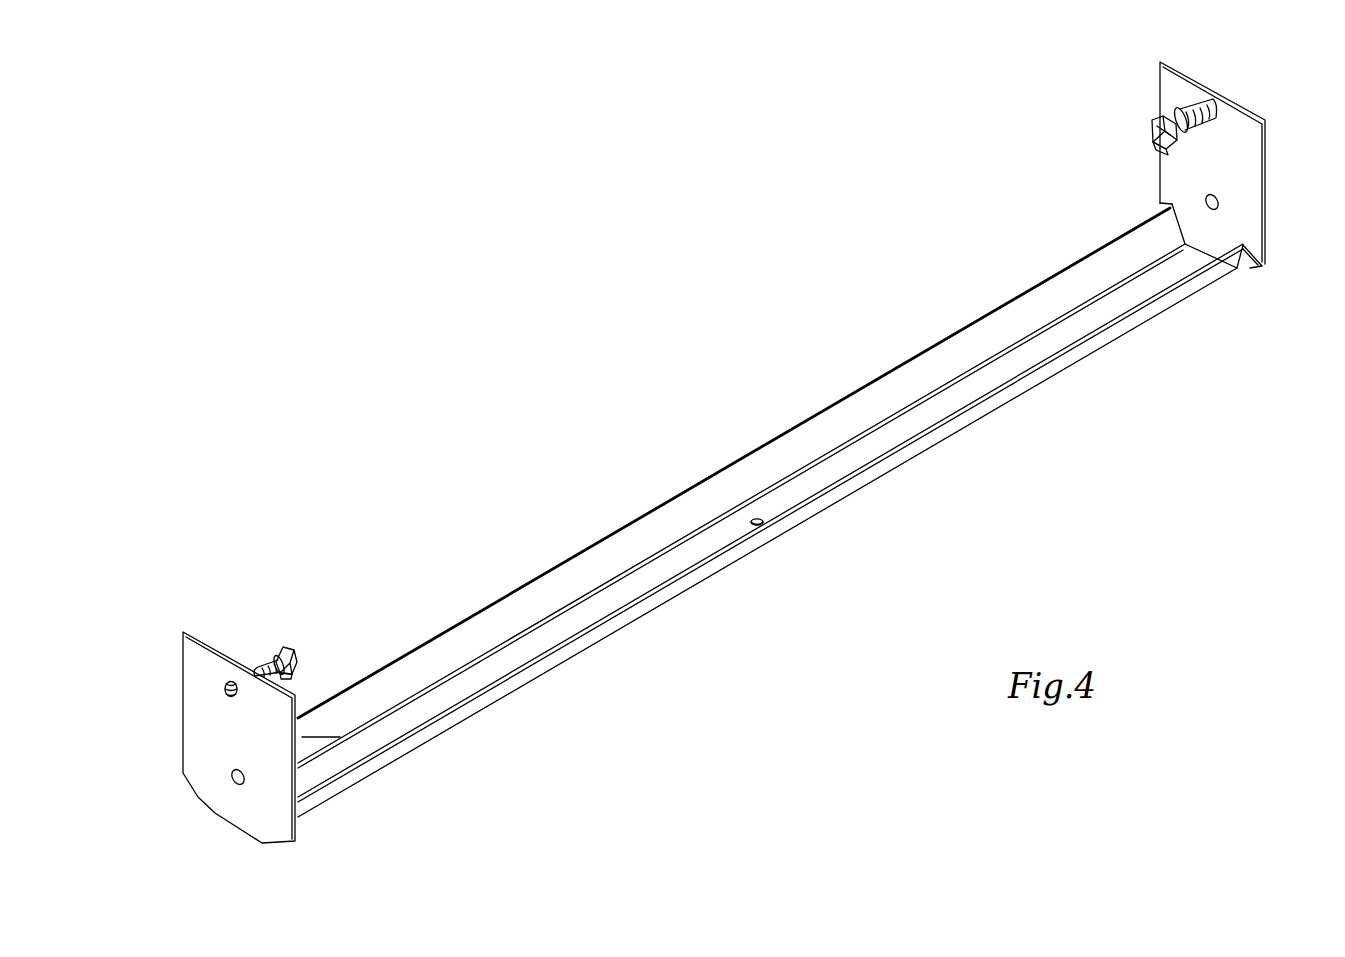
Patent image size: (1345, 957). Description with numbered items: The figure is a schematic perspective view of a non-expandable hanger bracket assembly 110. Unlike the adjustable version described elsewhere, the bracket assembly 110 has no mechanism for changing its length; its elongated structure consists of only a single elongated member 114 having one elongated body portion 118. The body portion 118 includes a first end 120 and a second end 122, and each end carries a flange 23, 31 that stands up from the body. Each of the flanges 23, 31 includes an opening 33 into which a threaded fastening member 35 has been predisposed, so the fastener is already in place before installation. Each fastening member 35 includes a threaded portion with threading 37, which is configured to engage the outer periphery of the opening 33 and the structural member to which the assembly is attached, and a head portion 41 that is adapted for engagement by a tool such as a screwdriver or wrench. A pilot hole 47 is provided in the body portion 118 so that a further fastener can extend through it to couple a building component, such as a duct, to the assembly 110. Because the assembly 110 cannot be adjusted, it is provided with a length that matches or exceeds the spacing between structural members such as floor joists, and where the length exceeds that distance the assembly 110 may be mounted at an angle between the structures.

The bracket assembly 110 is at (780, 510).
The elongated member 114 is at (658, 630).
The elongated body portion 118 is at (870, 491).
The first end 120 is at (1242, 207).
The second end 122 is at (288, 848).
The flange 31 is at (1270, 168).
The opening 33 is at (1211, 102).
The threaded fastening member 35 is at (1146, 123).
The threading 37 is at (1184, 108).
The head portion 41 is at (1152, 138).
The flange 23 is at (302, 737).
The pilot hole 47 is at (758, 527).